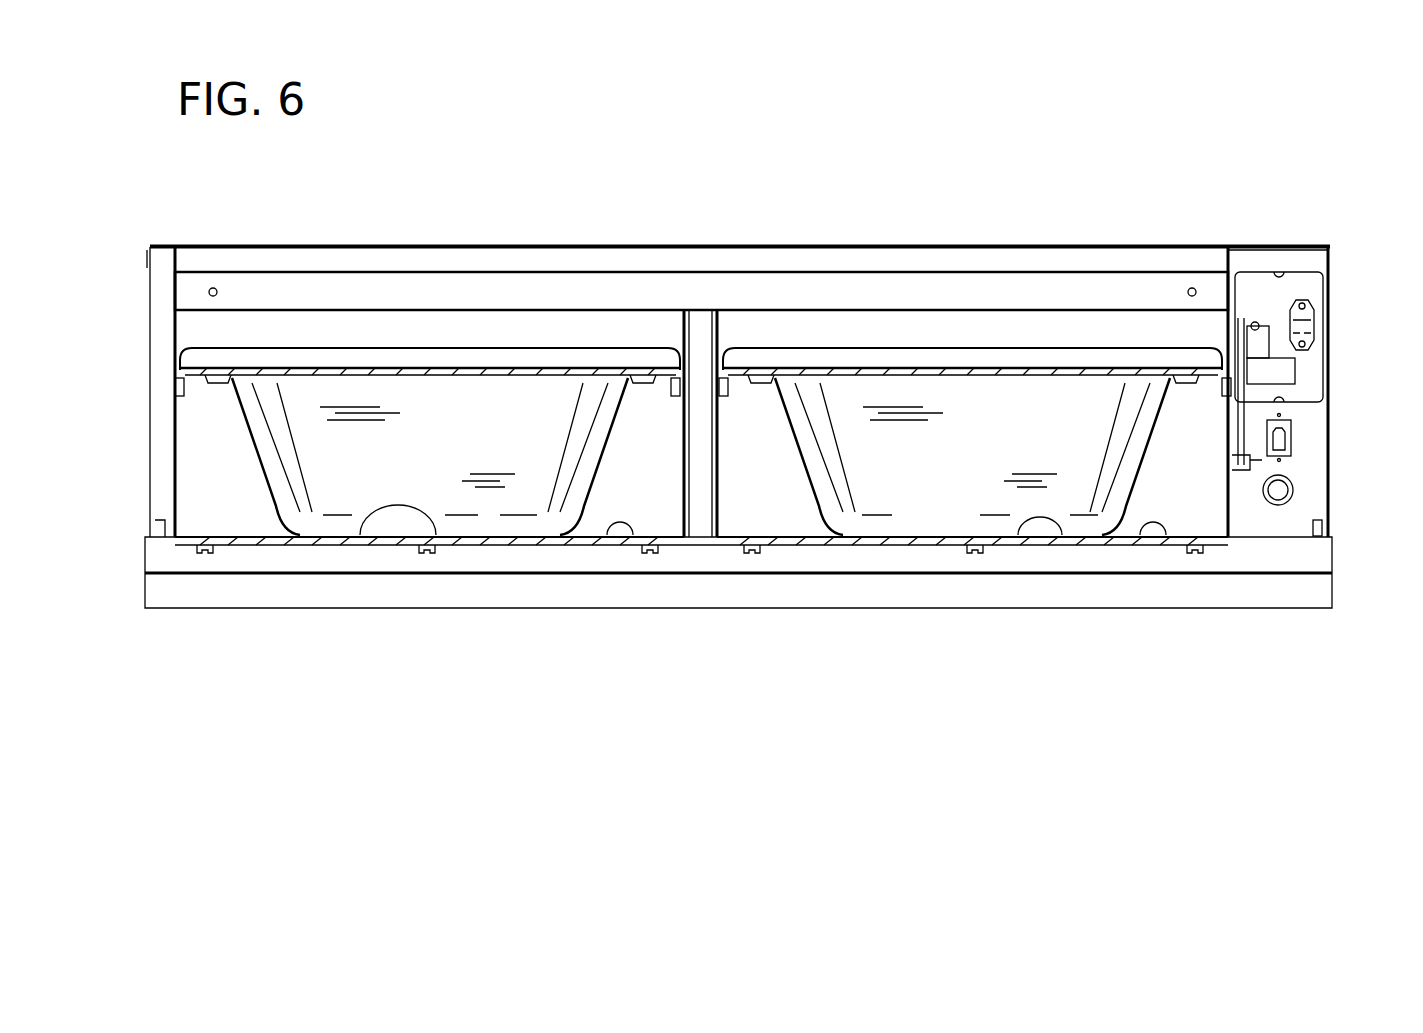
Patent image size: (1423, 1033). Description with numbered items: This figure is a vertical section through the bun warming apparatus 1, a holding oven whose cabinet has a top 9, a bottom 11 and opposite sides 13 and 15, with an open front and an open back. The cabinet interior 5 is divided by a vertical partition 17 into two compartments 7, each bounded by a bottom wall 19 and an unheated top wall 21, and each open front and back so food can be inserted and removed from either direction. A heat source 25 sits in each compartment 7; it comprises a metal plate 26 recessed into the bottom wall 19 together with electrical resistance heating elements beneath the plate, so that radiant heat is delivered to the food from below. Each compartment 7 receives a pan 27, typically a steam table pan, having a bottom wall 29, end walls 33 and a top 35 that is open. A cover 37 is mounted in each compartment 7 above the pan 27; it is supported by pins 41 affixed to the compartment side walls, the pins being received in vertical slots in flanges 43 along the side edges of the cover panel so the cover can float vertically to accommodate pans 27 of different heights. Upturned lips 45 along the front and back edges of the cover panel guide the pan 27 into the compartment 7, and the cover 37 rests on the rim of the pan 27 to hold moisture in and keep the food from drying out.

The apparatus 1 is at (1283, 153).
The interior 5 is at (210, 510).
The compartment 7 is at (228, 522).
The top 9 is at (1062, 245).
The bottom 11 is at (531, 612).
The side 13 is at (150, 305).
The side 15 is at (1328, 398).
The vertical partition 17 is at (703, 325).
The bottom wall 19 is at (610, 540).
The top wall 21 is at (338, 310).
The heat source 25 is at (470, 546).
The metal plate 26 is at (398, 542).
The pan 27 is at (305, 512).
The bottom wall 29 is at (378, 508).
The end wall 33 is at (447, 462).
The top 35 is at (292, 392).
The cover 37 is at (208, 364).
The pin 41 is at (188, 382).
The flange 43 is at (178, 392).
The upturned lip 45 is at (560, 356).